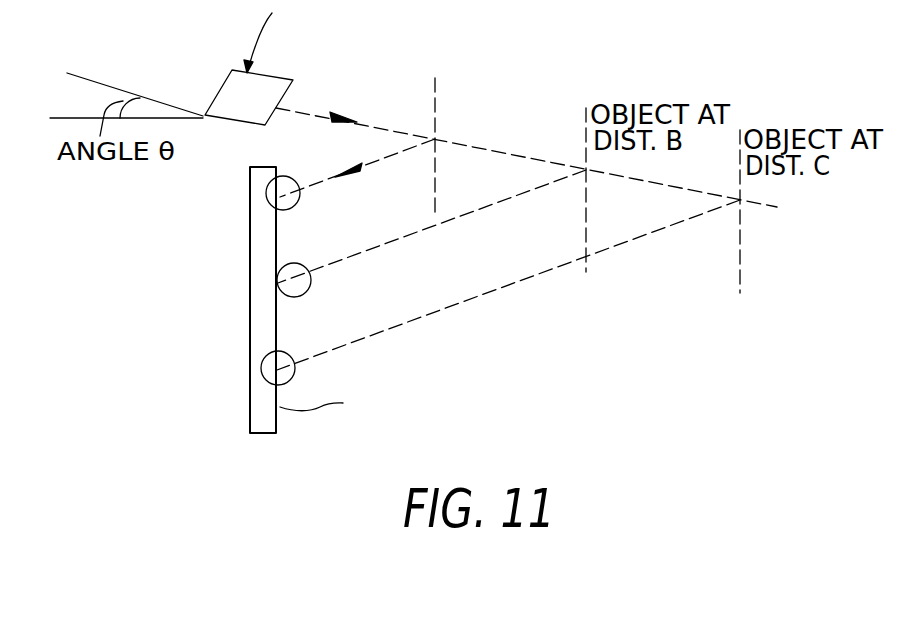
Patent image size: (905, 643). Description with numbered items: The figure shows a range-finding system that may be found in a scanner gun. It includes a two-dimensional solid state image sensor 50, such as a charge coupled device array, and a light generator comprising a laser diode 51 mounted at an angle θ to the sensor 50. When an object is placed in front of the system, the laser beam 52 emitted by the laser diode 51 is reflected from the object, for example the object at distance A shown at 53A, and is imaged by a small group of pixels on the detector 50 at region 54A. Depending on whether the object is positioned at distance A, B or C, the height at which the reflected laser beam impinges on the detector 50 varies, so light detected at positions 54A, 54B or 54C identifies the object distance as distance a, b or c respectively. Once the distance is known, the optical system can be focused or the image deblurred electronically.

The two-dimensional solid state image sensor 50 is at (249, 400).
The laser diode 51 is at (225, 82).
The laser beam 52 is at (376, 119).
The object at distance A 53A is at (433, 103).
The region of pixels for distance A 54A is at (350, 187).
The region of pixels for distance B 54B is at (431, 242).
The region of pixels for distance C 54C is at (500, 294).